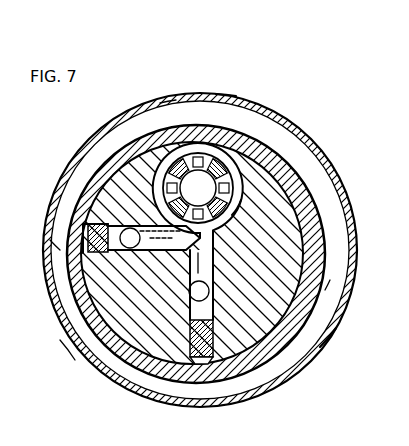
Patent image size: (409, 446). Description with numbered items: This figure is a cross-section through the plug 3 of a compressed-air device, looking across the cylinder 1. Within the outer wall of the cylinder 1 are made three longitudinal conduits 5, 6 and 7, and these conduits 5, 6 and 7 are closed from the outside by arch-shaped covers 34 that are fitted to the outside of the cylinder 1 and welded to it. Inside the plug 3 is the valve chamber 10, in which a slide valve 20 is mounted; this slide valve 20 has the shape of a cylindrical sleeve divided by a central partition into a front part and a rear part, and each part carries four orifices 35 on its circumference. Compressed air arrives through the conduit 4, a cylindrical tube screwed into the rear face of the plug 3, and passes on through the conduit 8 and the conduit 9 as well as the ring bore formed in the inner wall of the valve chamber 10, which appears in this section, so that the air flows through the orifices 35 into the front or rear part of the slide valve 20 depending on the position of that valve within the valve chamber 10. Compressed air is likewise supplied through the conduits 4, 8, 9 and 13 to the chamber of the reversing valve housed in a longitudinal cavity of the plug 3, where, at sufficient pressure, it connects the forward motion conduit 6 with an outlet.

The cylinder 1 is at (303, 158).
The plug 3 is at (290, 275).
The conduit 4 is at (130, 248).
The longitudinal conduit 5 is at (224, 106).
The longitudinal forward motion conduit 6 is at (333, 322).
The longitudinal conduit 7 is at (60, 300).
The conduit 8 is at (162, 250).
The conduit 9 is at (206, 266).
The valve chamber 10 is at (266, 118).
The conduit 13 is at (212, 292).
The slide valve 20 is at (226, 208).
The arch-shaped cover 34 is at (168, 100).
The orifice 35 is at (200, 152).